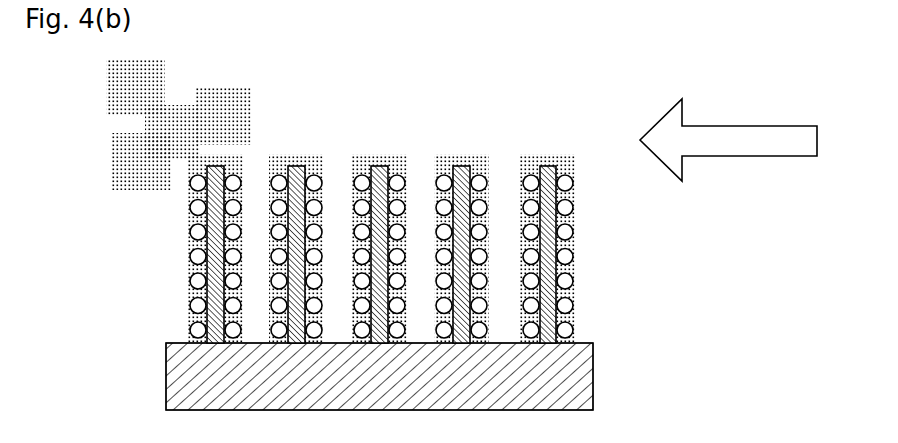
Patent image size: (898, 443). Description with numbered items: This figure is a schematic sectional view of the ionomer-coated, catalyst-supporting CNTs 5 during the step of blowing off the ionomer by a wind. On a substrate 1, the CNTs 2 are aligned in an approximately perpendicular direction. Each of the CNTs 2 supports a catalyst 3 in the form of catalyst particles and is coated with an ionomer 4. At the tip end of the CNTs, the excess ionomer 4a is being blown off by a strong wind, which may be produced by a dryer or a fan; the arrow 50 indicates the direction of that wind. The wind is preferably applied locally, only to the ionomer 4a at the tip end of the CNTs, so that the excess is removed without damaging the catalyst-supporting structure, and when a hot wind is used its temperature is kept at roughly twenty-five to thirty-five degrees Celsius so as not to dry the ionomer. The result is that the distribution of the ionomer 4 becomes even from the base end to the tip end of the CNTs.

The substrate 1 is at (585, 373).
The CNTs 2 is at (655, 195).
The catalyst 3 is at (563, 205).
The ionomer 4 is at (563, 268).
The excess ionomer 4a is at (237, 114).
The ionomer-coated, catalyst-supporting CNTs 5 is at (449, 248).
The arrow 50 is at (753, 133).